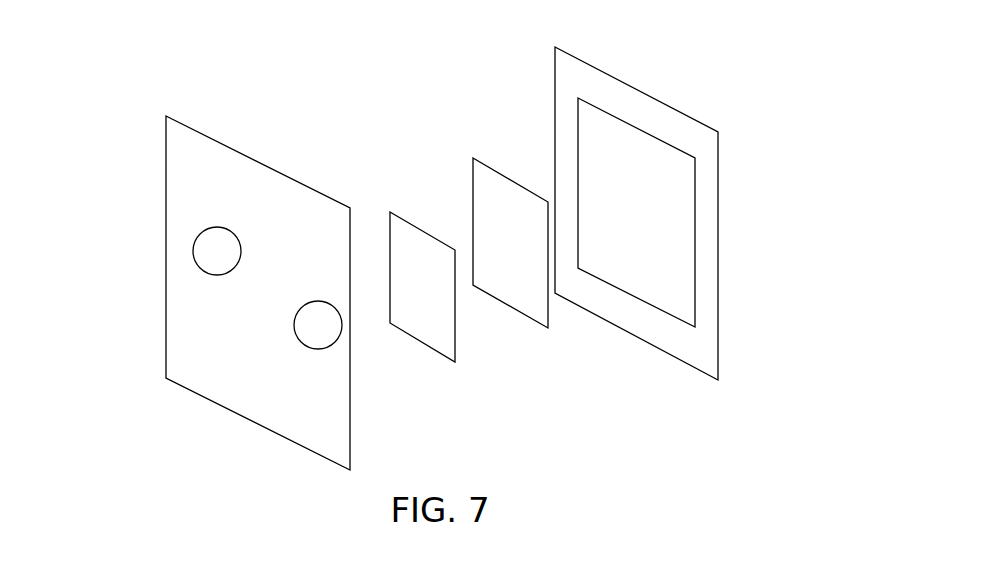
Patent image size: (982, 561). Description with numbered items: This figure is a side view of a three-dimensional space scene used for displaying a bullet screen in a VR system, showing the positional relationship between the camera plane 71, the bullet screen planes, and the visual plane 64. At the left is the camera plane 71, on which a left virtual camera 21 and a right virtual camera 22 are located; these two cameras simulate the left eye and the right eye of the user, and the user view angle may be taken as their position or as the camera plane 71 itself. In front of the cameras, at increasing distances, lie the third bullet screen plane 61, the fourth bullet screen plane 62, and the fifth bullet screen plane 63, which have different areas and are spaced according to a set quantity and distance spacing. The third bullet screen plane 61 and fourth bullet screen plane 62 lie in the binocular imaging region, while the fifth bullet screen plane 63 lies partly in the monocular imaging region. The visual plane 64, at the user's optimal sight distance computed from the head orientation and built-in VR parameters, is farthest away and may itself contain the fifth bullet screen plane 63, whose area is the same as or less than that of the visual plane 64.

The left virtual camera 21 is at (210, 242).
The right virtual camera 22 is at (323, 313).
The third bullet screen plane 61 is at (427, 268).
The fourth bullet screen plane 62 is at (519, 228).
The fifth bullet screen plane 63 is at (648, 260).
The visual plane 64 is at (683, 127).
The camera plane 71 is at (203, 367).